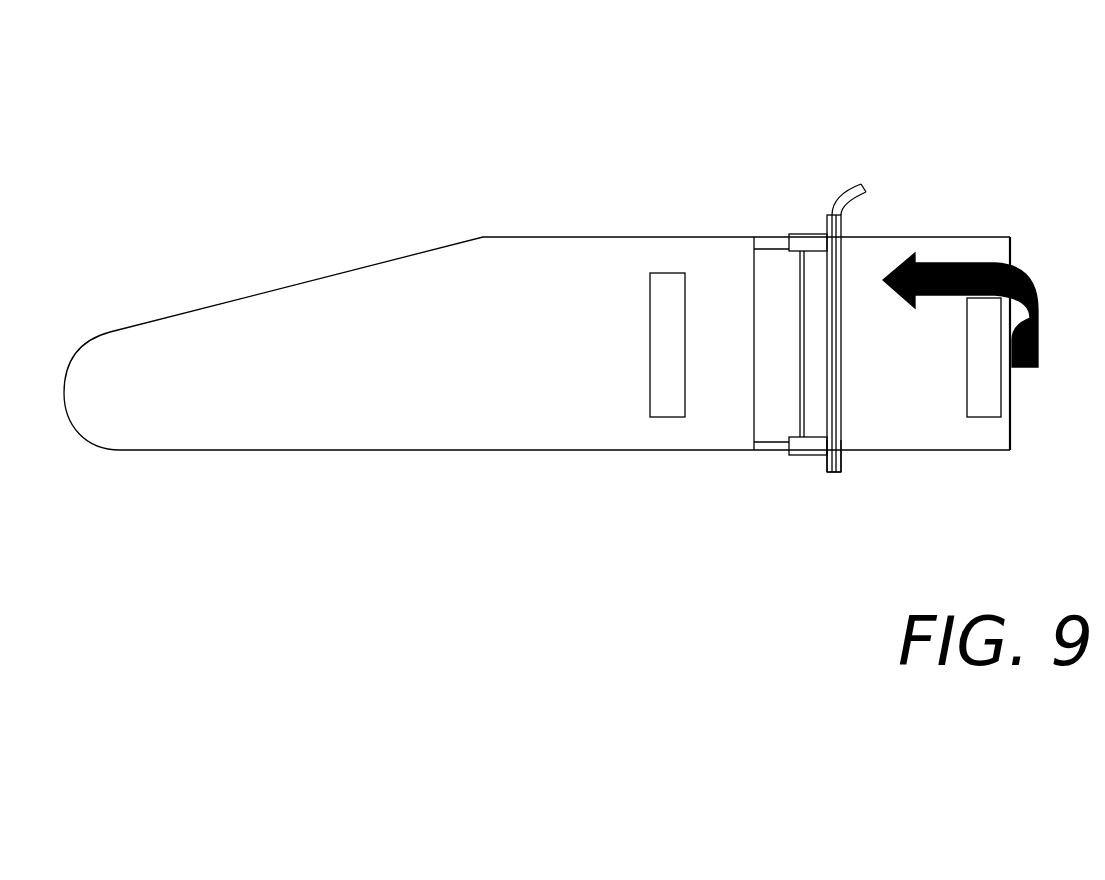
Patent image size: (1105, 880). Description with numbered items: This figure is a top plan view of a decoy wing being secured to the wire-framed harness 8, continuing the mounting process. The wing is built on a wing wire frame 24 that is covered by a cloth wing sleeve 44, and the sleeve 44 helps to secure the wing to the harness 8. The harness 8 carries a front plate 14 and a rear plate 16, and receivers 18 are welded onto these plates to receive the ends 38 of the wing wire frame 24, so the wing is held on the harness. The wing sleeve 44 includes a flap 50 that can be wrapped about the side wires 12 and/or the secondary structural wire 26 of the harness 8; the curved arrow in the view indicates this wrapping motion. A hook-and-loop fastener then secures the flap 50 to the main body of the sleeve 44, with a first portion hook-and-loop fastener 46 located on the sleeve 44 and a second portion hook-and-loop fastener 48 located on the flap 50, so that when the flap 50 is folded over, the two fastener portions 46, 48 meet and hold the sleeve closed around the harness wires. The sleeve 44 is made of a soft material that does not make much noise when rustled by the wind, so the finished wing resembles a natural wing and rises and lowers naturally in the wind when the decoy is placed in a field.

The harness 8 is at (868, 282).
The side wires 12 is at (840, 345).
The front plate 14 is at (832, 203).
The rear plate 16 is at (830, 473).
The receivers 18 is at (790, 232).
The wing wire frame 24 is at (778, 196).
The secondary structural wire 26 is at (800, 300).
The ends 38 is at (770, 450).
The wing sleeve 44 is at (287, 141).
The first portion hook-and-loop fastener 46 is at (657, 305).
The second portion hook-and-loop fastener 48 is at (993, 383).
The flap 50 is at (907, 235).